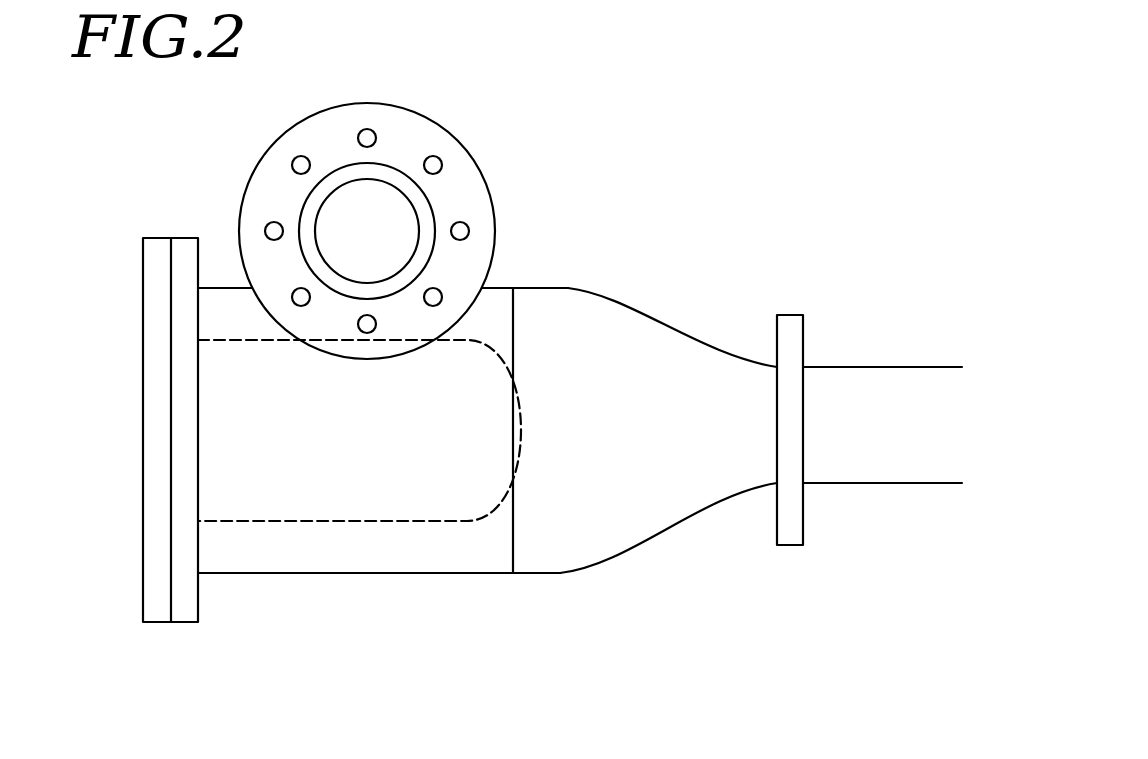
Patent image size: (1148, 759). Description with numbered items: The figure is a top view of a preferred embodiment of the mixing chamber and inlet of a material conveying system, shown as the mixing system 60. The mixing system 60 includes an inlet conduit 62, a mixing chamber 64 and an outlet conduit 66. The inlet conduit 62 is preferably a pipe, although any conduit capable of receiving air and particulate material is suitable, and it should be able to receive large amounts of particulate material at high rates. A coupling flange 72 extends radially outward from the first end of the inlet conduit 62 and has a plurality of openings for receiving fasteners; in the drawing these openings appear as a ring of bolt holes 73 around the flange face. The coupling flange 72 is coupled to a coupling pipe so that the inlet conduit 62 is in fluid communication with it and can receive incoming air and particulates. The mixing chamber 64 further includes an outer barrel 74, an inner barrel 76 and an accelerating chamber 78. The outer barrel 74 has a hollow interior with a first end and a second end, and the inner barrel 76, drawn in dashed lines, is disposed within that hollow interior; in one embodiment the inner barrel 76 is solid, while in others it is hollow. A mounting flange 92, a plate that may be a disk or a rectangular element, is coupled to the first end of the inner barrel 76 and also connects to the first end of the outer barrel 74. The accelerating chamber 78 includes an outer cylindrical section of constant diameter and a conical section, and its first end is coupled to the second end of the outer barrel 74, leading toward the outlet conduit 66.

The mixing system 60 is at (690, 200).
The inlet conduit 62 is at (438, 127).
The mixing chamber 64 is at (285, 553).
The outlet conduit 66 is at (850, 383).
The coupling flange 72 is at (470, 198).
The bolt holes 73 is at (291, 167).
The outer barrel 74 is at (475, 573).
The inner barrel 76 is at (400, 493).
The accelerating chamber 78 is at (650, 338).
The mounting flange 92 is at (183, 595).